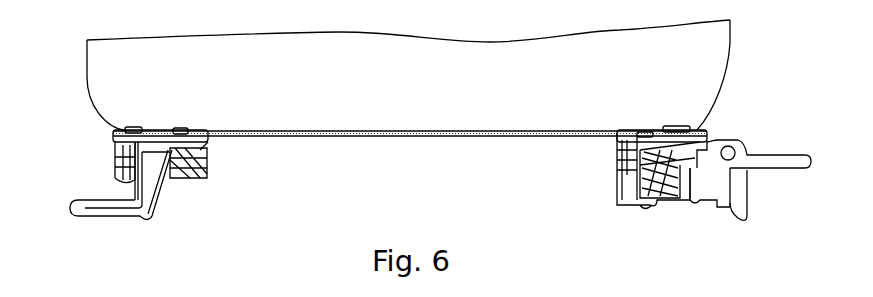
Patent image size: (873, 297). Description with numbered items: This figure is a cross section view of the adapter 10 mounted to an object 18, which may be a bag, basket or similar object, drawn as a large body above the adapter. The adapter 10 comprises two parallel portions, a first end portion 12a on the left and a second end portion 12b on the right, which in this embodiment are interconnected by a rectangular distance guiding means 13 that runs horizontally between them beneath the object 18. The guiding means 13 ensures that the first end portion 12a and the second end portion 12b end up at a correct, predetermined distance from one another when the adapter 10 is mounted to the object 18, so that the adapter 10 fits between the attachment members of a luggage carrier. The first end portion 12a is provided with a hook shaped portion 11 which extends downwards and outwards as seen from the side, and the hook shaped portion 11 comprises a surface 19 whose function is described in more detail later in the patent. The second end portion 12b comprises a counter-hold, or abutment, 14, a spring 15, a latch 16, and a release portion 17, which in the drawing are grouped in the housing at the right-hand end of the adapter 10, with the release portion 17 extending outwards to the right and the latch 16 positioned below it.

The adapter 10 is at (426, 116).
The hook shaped portion 11 is at (92, 219).
The first end portion 12a is at (163, 118).
The second end portion 12b is at (668, 116).
The distance guiding means 13 is at (353, 137).
The counter-hold 14 is at (688, 197).
The spring 15 is at (656, 190).
The latch 16 is at (738, 197).
The release portion 17 is at (788, 156).
The object 18 is at (733, 44).
The surface 19 is at (130, 191).